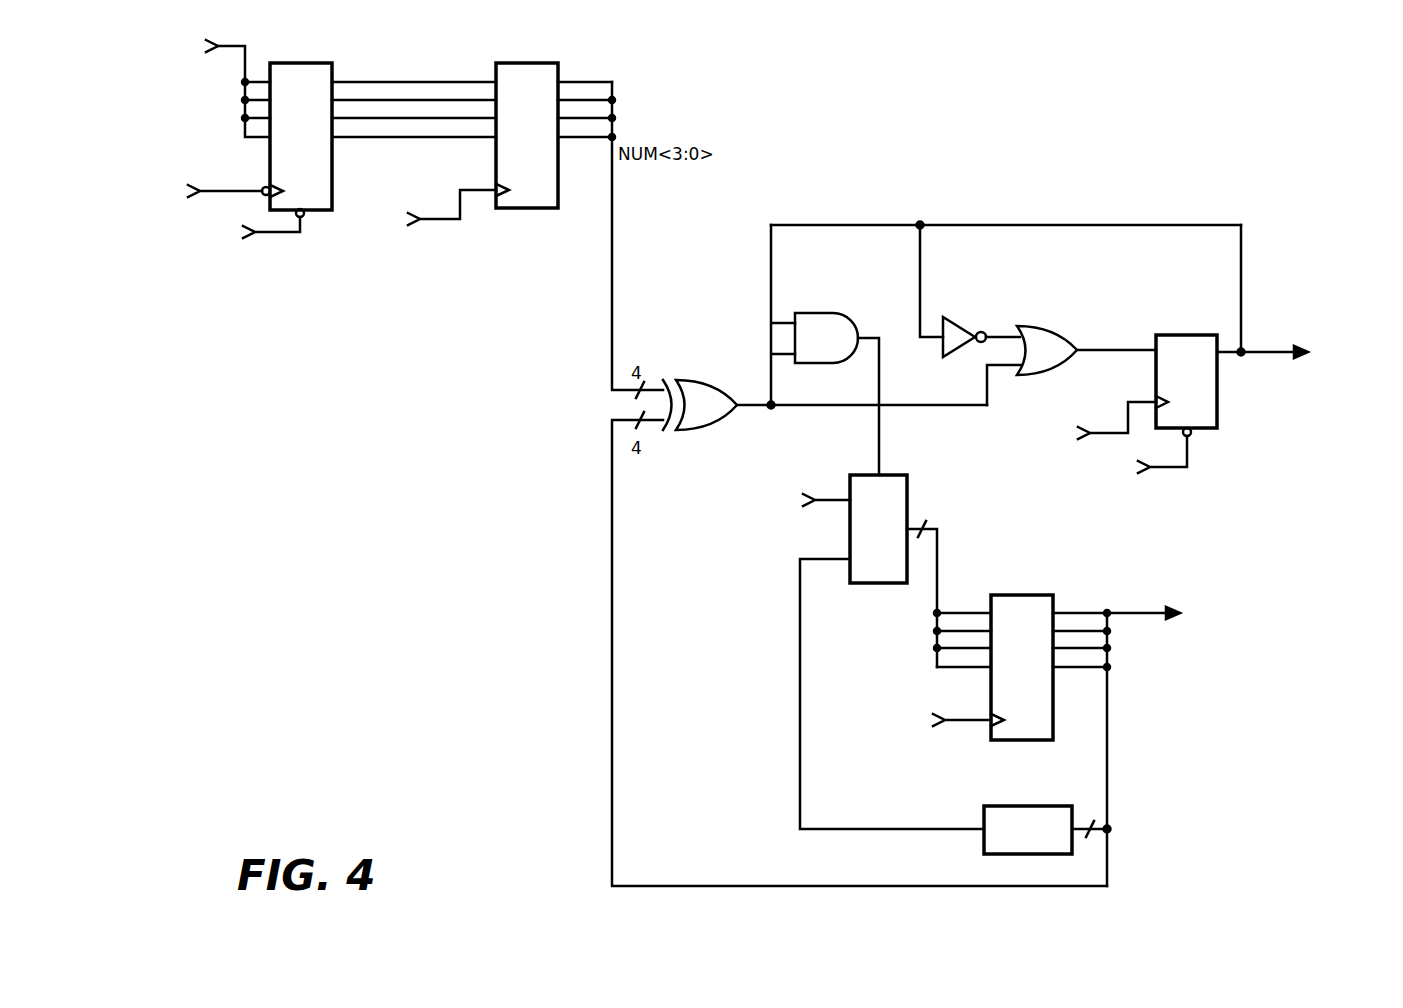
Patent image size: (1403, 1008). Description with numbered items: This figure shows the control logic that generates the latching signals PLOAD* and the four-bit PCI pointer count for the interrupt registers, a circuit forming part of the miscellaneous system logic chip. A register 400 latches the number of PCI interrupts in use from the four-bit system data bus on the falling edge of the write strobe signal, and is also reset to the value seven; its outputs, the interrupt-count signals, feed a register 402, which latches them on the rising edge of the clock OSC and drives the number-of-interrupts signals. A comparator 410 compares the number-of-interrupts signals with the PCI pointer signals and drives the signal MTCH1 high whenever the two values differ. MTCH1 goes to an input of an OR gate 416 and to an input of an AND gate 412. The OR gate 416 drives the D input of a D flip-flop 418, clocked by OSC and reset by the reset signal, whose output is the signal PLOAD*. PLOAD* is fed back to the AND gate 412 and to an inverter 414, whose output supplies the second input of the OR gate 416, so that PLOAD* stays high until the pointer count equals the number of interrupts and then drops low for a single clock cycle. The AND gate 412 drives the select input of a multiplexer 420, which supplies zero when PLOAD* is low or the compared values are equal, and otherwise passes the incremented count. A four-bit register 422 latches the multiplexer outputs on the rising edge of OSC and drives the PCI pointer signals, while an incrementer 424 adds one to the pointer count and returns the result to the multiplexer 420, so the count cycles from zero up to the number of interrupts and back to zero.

The register 400 is at (303, 63).
The register 402 is at (527, 63).
The comparator 410 is at (695, 380).
The AND gate 412 is at (817, 313).
The inverter 414 is at (952, 318).
The OR gate 416 is at (1044, 326).
The D flip-flop 418 is at (1196, 335).
The multiplexer 420 is at (892, 475).
The 4-bit register 422 is at (1040, 595).
The incrementer 424 is at (1005, 806).